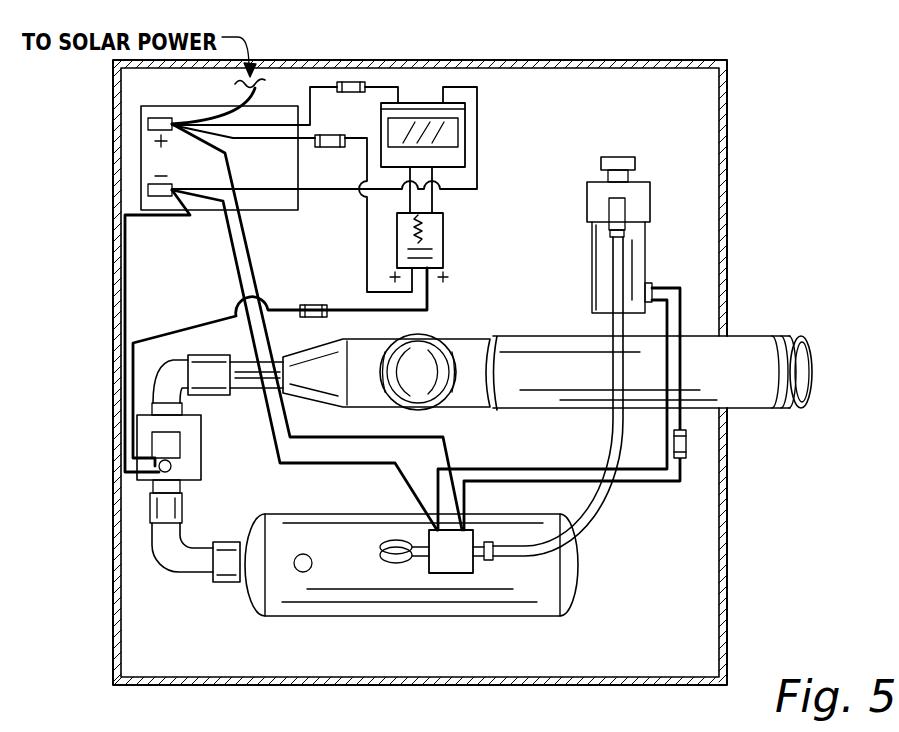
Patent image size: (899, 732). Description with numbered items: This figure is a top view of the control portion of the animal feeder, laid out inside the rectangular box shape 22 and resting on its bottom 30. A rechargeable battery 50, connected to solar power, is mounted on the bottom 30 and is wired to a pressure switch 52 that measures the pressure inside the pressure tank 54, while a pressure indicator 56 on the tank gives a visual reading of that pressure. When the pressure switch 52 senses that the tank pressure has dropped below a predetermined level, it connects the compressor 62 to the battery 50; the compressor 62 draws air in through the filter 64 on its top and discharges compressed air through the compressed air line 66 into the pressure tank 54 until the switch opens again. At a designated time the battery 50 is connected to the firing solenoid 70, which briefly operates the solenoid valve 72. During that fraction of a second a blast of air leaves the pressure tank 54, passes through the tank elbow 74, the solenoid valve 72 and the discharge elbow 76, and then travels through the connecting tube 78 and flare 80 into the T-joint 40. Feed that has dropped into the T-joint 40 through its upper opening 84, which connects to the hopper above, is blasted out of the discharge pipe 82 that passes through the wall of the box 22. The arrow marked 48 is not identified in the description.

The rectangular box shape 22 is at (729, 221).
The bottom 30 is at (497, 153).
The T-joint 40 is at (470, 343).
The treatment system 48 is at (508, 268).
The rechargeable battery 50 is at (244, 171).
The pressure switch 52 is at (461, 551).
The pressure tank 54 is at (323, 576).
The pressure indicator 56 is at (397, 548).
The compressor 62 is at (645, 262).
The filter 64 is at (620, 162).
The compressed air line 66 is at (593, 500).
The firing solenoid 70 is at (443, 250).
The solenoid valve 72 is at (198, 443).
The tank elbow 74 is at (190, 567).
The discharge elbow 76 is at (170, 387).
The connecting tube 78 is at (240, 343).
The flare 80 is at (305, 354).
The discharge pipe 82 is at (721, 385).
The upper opening 84 is at (437, 343).